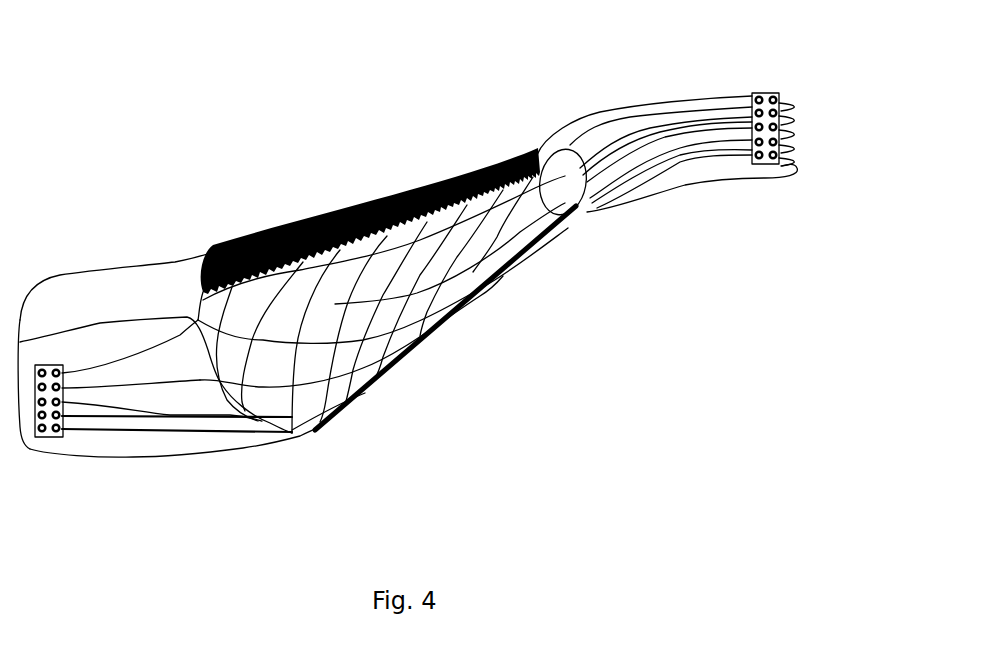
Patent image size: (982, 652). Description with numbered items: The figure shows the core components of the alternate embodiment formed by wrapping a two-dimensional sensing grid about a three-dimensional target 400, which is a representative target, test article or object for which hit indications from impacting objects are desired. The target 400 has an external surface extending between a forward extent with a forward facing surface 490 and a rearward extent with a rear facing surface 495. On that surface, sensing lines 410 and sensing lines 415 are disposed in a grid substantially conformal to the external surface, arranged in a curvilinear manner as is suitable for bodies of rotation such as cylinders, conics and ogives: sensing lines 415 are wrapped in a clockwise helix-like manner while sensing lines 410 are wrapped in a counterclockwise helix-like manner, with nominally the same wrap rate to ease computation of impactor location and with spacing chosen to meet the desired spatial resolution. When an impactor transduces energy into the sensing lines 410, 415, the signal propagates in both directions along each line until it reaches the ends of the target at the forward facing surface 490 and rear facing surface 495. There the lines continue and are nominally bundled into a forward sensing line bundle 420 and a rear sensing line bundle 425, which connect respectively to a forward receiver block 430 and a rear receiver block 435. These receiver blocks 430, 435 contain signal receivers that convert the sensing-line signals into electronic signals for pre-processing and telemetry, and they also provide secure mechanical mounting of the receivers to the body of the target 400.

The target 400 is at (357, 207).
The sensing lines 410 is at (300, 395).
The sensing lines 415 is at (393, 303).
The forward sensing line bundle 420 is at (711, 71).
The rear sensing line bundle 425 is at (187, 249).
The forward receiver block 430 is at (760, 177).
The rear receiver block 435 is at (47, 447).
The forward facing surface 490 is at (537, 140).
The rear facing surface 495 is at (226, 243).